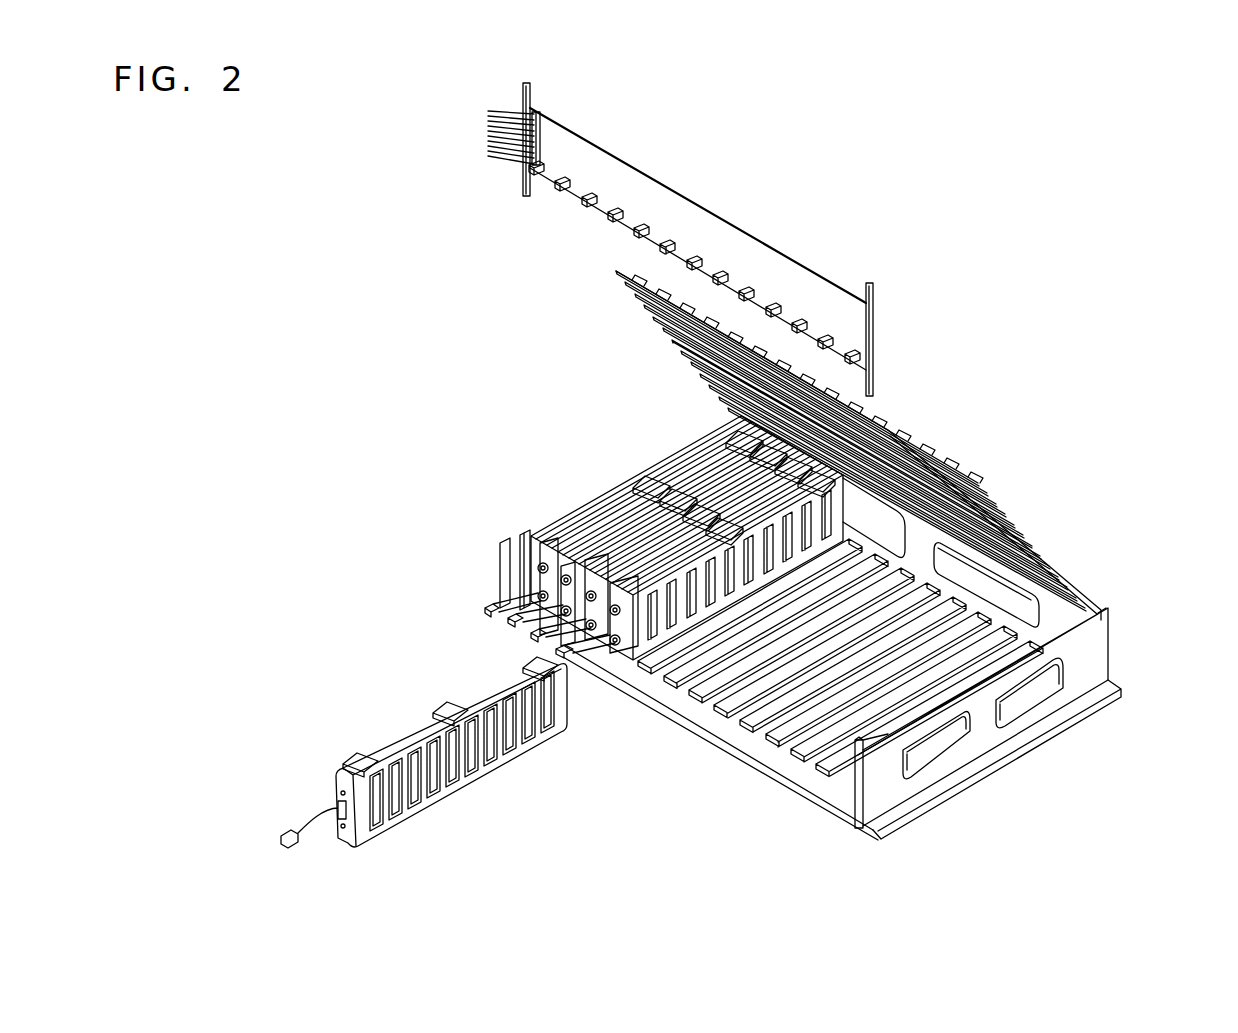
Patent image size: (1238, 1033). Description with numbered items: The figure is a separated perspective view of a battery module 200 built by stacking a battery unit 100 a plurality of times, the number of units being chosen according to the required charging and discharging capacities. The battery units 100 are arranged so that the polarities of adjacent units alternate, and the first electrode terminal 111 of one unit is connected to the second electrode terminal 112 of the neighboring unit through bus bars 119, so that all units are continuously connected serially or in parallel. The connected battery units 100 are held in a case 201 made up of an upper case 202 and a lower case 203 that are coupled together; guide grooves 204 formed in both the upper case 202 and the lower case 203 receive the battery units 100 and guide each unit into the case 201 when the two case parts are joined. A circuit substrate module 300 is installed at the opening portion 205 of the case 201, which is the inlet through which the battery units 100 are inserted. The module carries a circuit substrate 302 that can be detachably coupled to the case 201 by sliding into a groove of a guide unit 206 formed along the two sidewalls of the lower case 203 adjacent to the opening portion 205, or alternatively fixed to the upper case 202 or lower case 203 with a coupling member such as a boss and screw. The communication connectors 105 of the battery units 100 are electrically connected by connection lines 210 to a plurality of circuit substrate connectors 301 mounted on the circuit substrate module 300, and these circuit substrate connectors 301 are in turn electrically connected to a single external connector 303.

The battery unit 100 is at (672, 446).
The communication connector 105 is at (530, 563).
The first electrode terminal 111 is at (548, 545).
The second electrode terminal 112 is at (587, 583).
The bus bar 119 is at (585, 552).
The battery module 200 is at (538, 419).
The case 201 is at (1163, 637).
The upper case 202 is at (1060, 571).
The lower case 203 is at (1090, 638).
The guide groove 204 is at (777, 738).
The opening portion 205 is at (744, 723).
The guide unit 206 is at (521, 522).
The connection line 210 is at (530, 590).
The circuit substrate module 300 is at (740, 214).
The circuit substrate connector 301 is at (585, 207).
The circuit substrate 302 is at (680, 204).
The external connector 303 is at (532, 132).